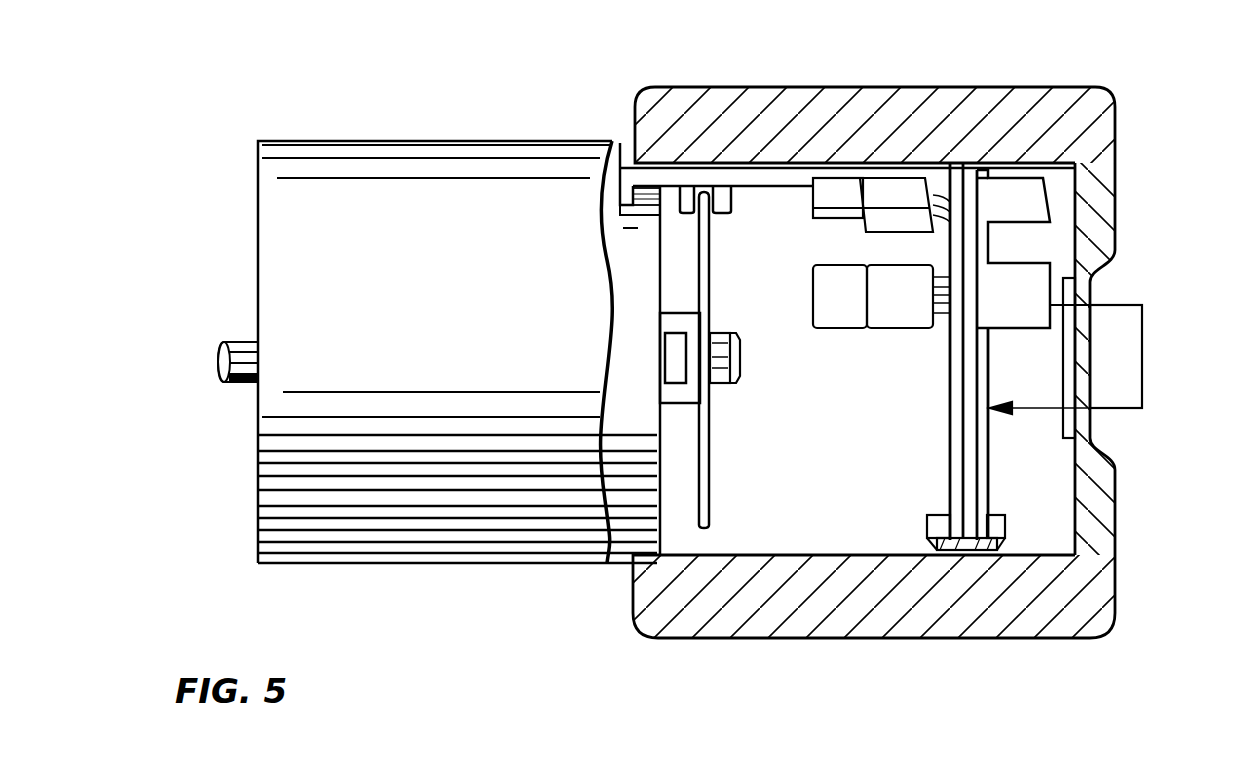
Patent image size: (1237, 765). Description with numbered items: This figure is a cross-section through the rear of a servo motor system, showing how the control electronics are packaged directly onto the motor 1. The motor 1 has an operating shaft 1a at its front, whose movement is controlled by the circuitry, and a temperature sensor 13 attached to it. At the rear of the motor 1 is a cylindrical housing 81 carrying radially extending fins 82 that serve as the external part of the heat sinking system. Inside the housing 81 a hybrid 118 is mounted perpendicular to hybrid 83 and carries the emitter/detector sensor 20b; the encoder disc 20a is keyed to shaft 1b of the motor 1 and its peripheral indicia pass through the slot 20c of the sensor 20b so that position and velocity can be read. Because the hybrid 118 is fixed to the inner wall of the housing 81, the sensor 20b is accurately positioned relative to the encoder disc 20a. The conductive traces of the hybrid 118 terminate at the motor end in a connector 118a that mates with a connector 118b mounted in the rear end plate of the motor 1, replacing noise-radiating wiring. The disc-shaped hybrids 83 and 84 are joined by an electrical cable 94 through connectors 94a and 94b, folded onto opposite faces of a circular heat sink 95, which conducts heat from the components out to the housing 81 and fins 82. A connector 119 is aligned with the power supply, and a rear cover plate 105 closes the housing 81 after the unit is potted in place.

The motor 1 is at (398, 540).
The operating shaft 1a is at (228, 352).
The shaft 1b is at (722, 353).
The temperature sensor 13 is at (620, 190).
The encoder disc 20a is at (708, 293).
The emitter/detector sensor 20b is at (732, 213).
The slot 20c is at (688, 212).
The housing 81 is at (770, 545).
The fins 82 is at (972, 88).
The hybrid 83 is at (950, 415).
The hybrid 84 is at (990, 456).
The electrical cable 94 is at (963, 547).
The connector 94a is at (925, 545).
The connector 94b is at (1027, 550).
The heat sink 95 is at (1030, 196).
The rear cover plate 105 is at (1110, 548).
The hybrid 118 is at (785, 175).
The connector 118a is at (690, 180).
The connector 118b is at (630, 167).
The connector 119 is at (1133, 313).